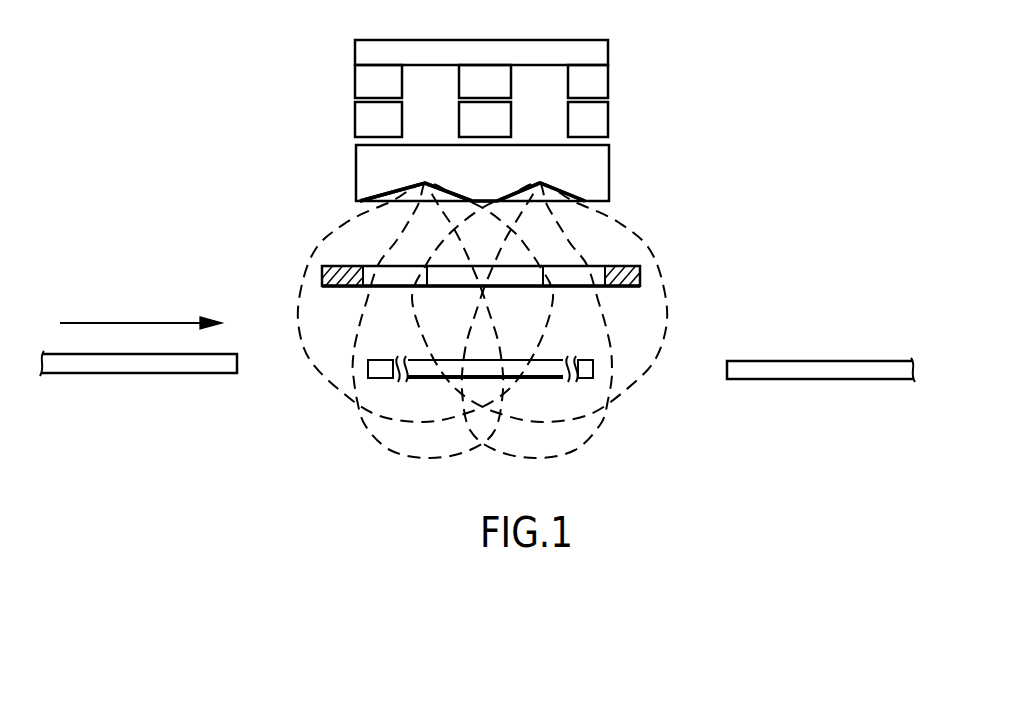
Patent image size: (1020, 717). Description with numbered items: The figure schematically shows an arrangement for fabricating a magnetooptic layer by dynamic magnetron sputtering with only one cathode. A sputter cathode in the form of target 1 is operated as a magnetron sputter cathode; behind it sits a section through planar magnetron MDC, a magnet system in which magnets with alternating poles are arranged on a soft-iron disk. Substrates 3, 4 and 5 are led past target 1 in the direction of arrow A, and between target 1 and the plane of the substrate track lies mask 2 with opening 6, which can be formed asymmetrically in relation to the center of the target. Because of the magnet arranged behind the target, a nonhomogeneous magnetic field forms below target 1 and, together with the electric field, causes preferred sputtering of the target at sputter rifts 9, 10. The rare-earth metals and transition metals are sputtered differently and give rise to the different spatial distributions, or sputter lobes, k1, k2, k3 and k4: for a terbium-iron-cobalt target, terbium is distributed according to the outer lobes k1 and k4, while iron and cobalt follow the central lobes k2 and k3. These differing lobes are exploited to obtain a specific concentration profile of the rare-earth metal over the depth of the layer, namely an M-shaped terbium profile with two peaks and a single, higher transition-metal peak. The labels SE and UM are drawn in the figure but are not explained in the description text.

The target 1 is at (597, 168).
The mask 2 is at (640, 280).
The substrate 3 is at (162, 365).
The substrate 4 is at (593, 373).
The substrate 5 is at (837, 373).
The opening 6 is at (515, 224).
The sputter rift 9 is at (425, 183).
The sputter rift 10 is at (543, 183).
The sputter lobe k1 is at (333, 393).
The sputter lobe k2 is at (400, 453).
The sputter lobe k3 is at (562, 462).
The sputter lobe k4 is at (650, 370).
The planar magnetron MDC is at (623, 33).
The S.E sensitivity region SE is at (648, 224).
The ÜM overlap region UM is at (613, 323).
The arrow A is at (141, 307).